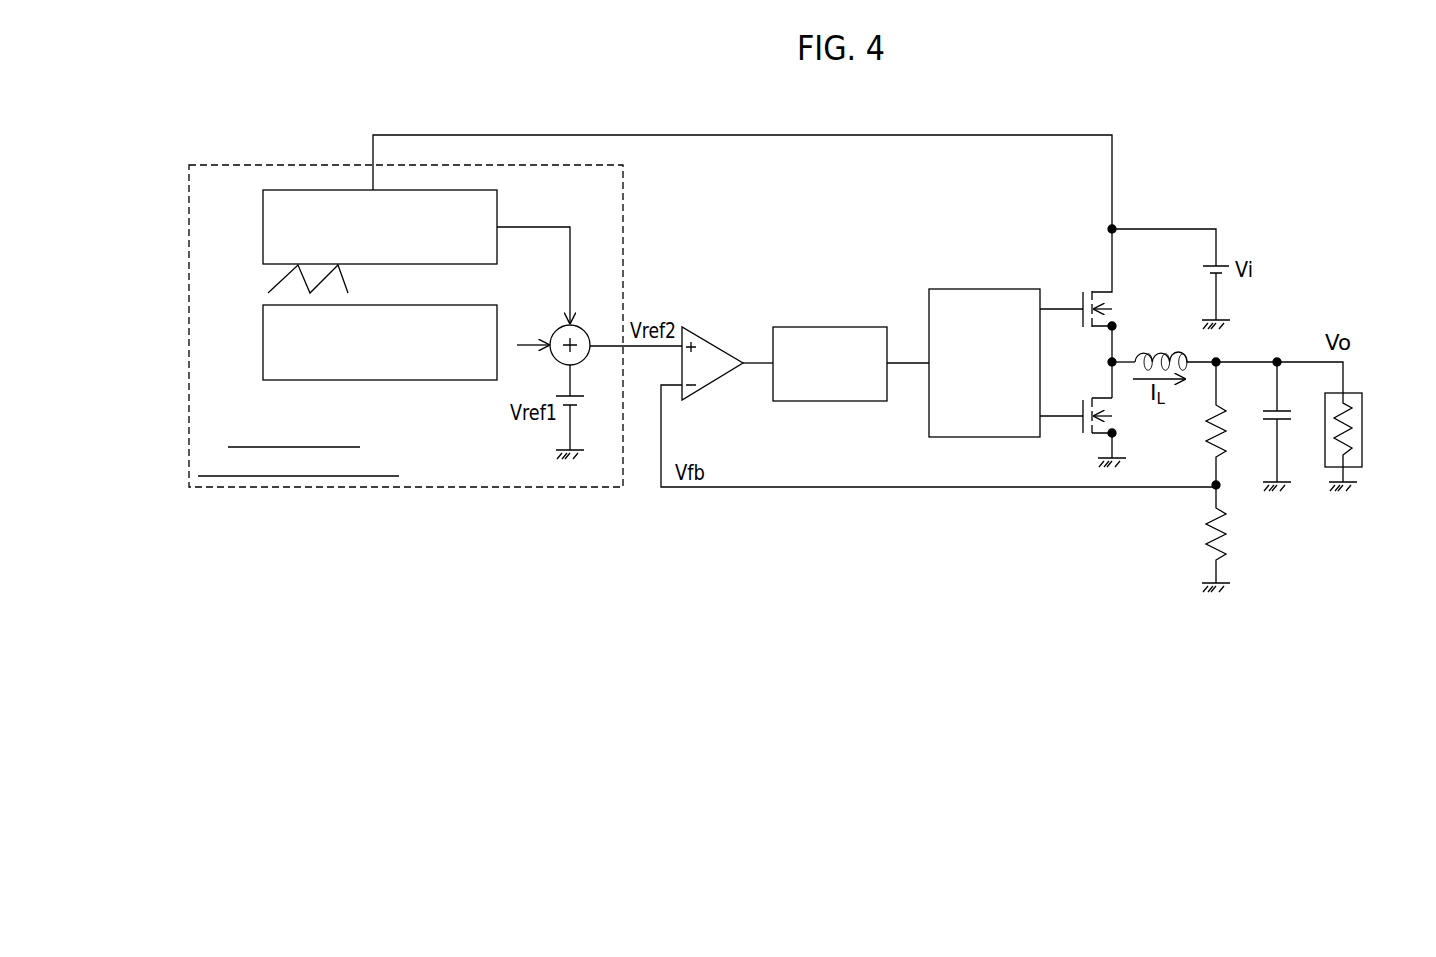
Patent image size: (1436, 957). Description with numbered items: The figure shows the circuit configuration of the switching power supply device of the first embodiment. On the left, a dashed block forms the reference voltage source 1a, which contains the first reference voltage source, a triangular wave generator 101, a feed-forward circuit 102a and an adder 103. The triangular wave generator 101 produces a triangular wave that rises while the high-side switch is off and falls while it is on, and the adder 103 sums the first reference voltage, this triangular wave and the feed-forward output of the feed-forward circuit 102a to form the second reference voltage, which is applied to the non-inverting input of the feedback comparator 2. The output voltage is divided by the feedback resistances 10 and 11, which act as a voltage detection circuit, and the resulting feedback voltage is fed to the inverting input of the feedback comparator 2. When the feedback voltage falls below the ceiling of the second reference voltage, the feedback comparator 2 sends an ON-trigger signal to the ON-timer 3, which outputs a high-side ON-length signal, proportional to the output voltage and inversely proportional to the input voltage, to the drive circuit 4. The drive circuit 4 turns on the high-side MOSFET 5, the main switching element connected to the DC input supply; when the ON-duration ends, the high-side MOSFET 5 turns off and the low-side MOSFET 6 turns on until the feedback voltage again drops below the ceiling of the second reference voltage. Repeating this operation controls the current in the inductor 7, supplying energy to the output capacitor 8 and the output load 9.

The reference voltage source 1a is at (405, 487).
The triangular wave generator 101 is at (350, 380).
The feed-forward circuit 102a is at (498, 210).
The adder 103 is at (585, 323).
The feedback comparator 2 is at (703, 337).
The ON-timer 3 is at (820, 327).
The drive circuit 4 is at (970, 289).
The high-side MOSFET 5 is at (1093, 290).
The low-side MOSFET 6 is at (1093, 398).
The inductor 7 is at (1157, 350).
The output capacitor 8 is at (1287, 425).
The output load 9 is at (1364, 432).
The feedback resistance 10 is at (1205, 450).
The feedback resistance 11 is at (1208, 537).